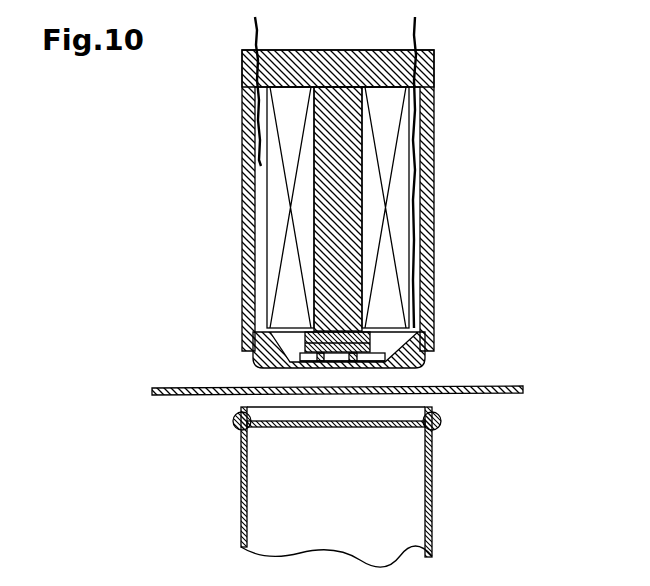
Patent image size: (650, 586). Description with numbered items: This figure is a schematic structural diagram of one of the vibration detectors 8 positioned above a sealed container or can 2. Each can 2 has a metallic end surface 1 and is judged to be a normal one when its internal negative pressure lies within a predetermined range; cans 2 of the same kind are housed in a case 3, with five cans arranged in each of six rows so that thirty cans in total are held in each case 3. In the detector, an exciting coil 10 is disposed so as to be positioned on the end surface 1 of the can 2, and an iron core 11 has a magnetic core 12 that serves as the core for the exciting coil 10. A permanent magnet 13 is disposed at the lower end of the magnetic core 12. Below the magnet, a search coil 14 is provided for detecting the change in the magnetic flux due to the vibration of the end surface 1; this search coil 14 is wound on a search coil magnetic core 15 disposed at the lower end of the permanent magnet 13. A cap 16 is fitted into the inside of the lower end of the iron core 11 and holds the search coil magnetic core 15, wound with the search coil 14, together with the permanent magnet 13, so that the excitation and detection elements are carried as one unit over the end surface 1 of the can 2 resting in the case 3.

The metallic end surface 1 is at (377, 427).
The sealed container or can 2 is at (233, 475).
The case 3 is at (508, 387).
The vibration detector 8 is at (448, 218).
The exciting coil 10 is at (278, 197).
The iron core 11 is at (434, 83).
The magnetic core 12 is at (348, 152).
The permanent magnet 13 is at (305, 338).
The search coil 14 is at (305, 355).
The search coil magnetic core 15 is at (343, 360).
The cap 16 is at (387, 343).